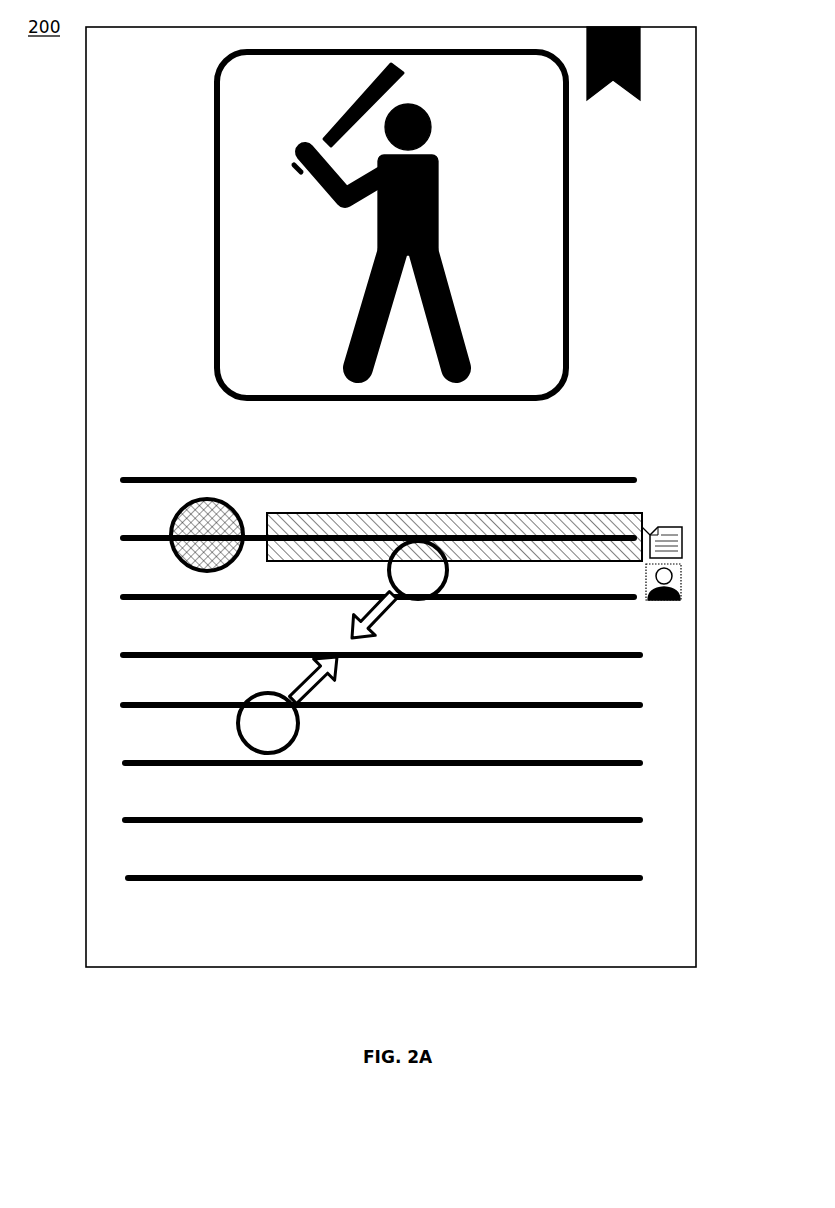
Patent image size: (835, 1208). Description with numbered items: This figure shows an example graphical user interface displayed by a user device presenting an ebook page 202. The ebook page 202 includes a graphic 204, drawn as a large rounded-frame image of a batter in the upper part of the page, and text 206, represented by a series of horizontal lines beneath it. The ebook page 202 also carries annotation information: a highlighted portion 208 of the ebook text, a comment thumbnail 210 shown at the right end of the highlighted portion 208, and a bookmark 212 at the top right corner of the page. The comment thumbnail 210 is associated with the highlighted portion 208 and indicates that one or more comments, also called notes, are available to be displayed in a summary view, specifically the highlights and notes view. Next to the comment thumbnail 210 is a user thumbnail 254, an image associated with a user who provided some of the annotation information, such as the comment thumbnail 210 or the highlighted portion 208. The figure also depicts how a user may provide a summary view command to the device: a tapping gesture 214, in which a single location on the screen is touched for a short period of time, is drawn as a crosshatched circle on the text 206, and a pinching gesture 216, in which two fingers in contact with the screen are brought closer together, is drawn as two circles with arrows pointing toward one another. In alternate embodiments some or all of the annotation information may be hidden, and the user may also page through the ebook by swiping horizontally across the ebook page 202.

The ebook page 202 is at (710, 166).
The graphic 204 is at (584, 275).
The text 206 is at (150, 453).
The highlighted portion 208 is at (649, 506).
The comment thumbnail 210 is at (697, 550).
The bookmark 212 is at (653, 70).
The tapping gesture 214 is at (161, 521).
The pinching gesture 216 is at (460, 590).
The user thumbnail 254 is at (696, 595).